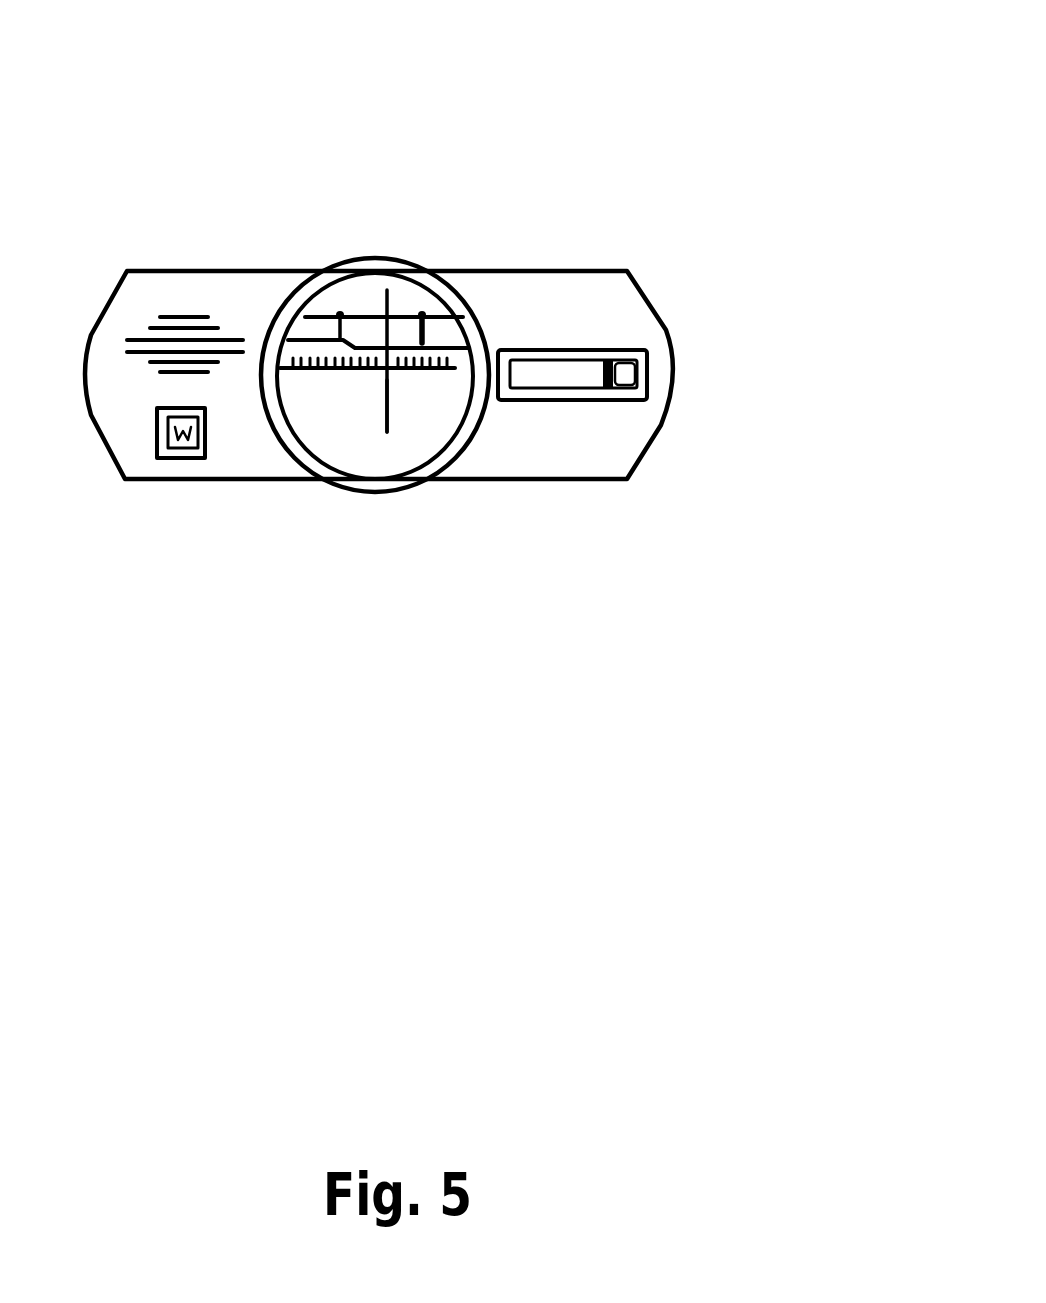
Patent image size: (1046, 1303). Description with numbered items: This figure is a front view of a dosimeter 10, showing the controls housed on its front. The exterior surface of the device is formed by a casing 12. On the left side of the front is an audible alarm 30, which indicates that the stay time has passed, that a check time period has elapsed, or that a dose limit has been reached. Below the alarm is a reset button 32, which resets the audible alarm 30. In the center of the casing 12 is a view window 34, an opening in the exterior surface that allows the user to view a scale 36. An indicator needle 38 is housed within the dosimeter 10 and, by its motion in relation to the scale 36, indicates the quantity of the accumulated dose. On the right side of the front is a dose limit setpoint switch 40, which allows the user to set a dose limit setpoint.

The dosimeter 10 is at (647, 80).
The casing 12 is at (730, 528).
The audible alarm 30 is at (180, 300).
The reset button 32 is at (148, 550).
The view window 34 is at (363, 293).
The scale 36 is at (503, 520).
The indicator needle 38 is at (357, 562).
The dose limit setpoint switch 40 is at (710, 223).